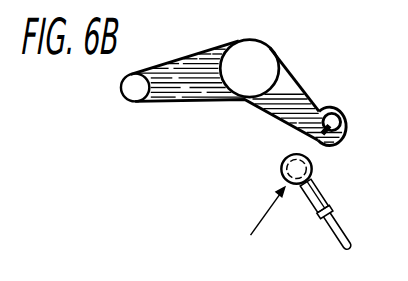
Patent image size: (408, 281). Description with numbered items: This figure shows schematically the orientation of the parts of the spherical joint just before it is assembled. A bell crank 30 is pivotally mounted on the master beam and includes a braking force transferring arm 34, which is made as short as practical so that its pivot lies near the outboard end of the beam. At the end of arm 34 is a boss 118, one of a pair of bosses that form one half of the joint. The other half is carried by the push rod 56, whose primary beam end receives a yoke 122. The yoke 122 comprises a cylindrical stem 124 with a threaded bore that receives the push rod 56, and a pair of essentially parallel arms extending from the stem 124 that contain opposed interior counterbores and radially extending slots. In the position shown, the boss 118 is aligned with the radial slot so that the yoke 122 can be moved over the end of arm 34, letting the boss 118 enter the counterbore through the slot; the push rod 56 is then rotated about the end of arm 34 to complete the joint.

The bell crank 30 is at (237, 52).
The braking force transferring arm 34 is at (283, 88).
The boss 118 is at (340, 106).
The yoke 122 is at (312, 177).
The cylindrical stem 124 is at (323, 206).
The push rod 56 is at (327, 201).